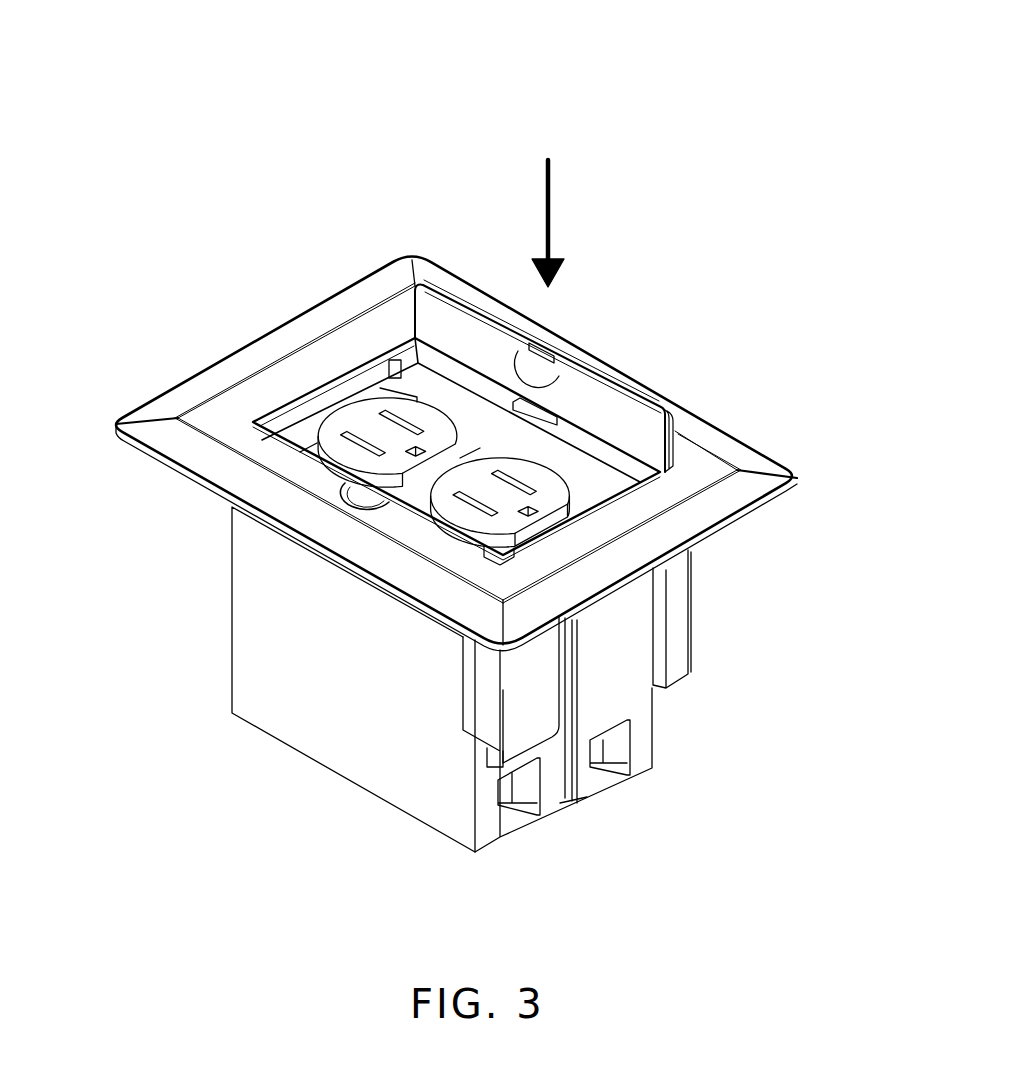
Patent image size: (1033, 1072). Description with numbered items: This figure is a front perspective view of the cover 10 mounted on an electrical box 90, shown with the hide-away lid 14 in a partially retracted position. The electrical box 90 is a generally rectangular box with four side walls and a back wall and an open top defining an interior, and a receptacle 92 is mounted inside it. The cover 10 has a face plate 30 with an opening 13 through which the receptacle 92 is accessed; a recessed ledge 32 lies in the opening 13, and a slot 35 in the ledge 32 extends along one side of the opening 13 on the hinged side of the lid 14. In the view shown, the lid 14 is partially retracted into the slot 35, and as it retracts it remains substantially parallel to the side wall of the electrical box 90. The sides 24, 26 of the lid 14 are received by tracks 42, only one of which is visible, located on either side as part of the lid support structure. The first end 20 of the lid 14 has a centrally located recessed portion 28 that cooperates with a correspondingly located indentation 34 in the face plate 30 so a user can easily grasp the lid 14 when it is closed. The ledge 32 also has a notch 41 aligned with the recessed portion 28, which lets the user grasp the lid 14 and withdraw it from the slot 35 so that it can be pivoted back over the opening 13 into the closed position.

The cover 10 is at (748, 381).
The opening 13 is at (318, 398).
The lid 14 is at (600, 412).
The first end 20 is at (646, 452).
The side 24 is at (417, 336).
The side 26 is at (740, 474).
The recessed portion 28 is at (551, 350).
The face plate 30 is at (640, 508).
The recessed ledge 32 is at (347, 423).
The indentation 34 is at (343, 500).
The slot 35 is at (463, 373).
The notch 41 is at (535, 410).
The track 42 is at (677, 654).
The electrical box 90 is at (372, 737).
The receptacle 92 is at (313, 440).